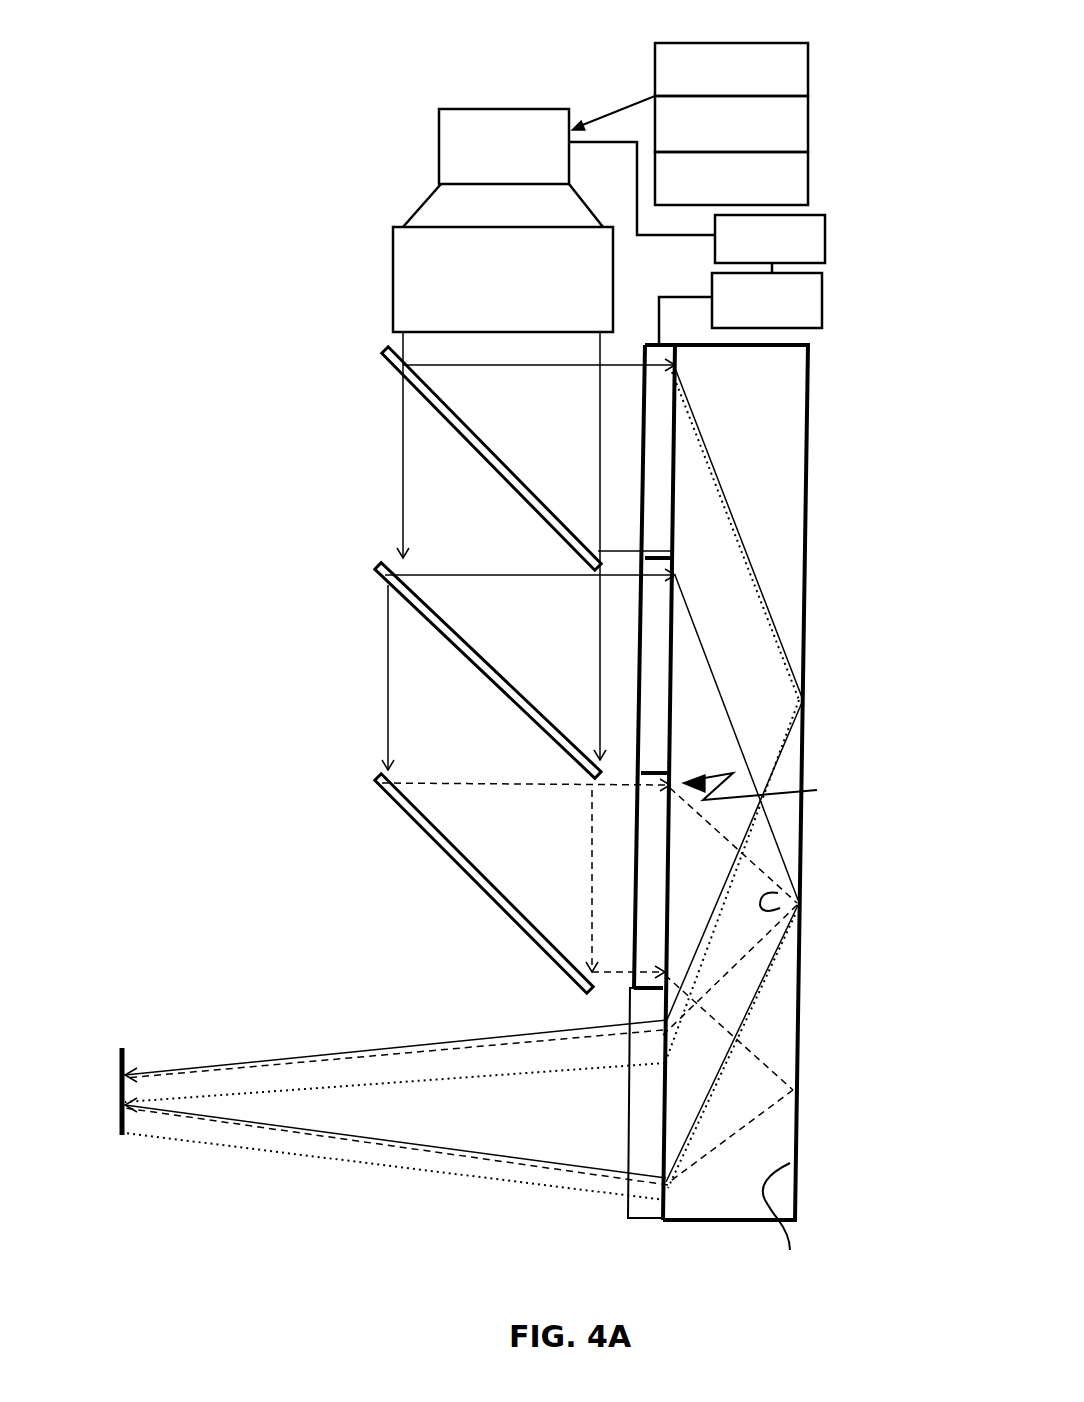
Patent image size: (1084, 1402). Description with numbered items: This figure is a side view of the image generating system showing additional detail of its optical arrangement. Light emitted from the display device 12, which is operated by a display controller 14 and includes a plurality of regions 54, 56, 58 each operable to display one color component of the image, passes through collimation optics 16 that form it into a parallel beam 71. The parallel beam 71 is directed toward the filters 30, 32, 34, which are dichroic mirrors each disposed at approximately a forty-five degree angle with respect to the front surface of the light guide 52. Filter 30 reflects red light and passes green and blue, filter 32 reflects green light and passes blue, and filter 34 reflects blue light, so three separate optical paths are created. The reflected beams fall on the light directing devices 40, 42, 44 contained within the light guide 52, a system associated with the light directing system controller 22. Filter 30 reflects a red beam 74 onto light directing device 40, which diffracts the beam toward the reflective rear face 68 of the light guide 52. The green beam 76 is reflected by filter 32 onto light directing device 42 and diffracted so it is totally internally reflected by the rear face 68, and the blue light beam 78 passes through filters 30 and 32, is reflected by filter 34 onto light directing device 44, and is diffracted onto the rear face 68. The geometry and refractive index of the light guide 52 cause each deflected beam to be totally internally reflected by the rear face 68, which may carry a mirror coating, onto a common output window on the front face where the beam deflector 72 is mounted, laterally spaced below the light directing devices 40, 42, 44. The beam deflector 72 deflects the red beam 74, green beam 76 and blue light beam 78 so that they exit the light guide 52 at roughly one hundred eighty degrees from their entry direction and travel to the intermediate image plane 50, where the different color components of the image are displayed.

The display device 12 is at (502, 128).
The display controller 14 is at (825, 243).
The collimation optics 16 is at (405, 278).
The light directing system controller 22 is at (808, 317).
The filter 30 is at (505, 480).
The filter 32 is at (495, 700).
The filter 34 is at (460, 850).
The light directing device 40 is at (662, 473).
The light directing device 42 is at (655, 655).
The light directing device 44 is at (655, 885).
The intermediate image plane 50 is at (128, 1053).
The light guide 52 is at (817, 391).
The region 54 is at (742, 72).
The region 56 is at (793, 127).
The region 58 is at (797, 192).
The rear face 68 is at (782, 1225).
The parallel beam 71 is at (407, 347).
The beam deflector 72 is at (635, 1155).
The red beam 74 is at (518, 368).
The green beam 76 is at (798, 780).
The blue light beam 78 is at (795, 905).